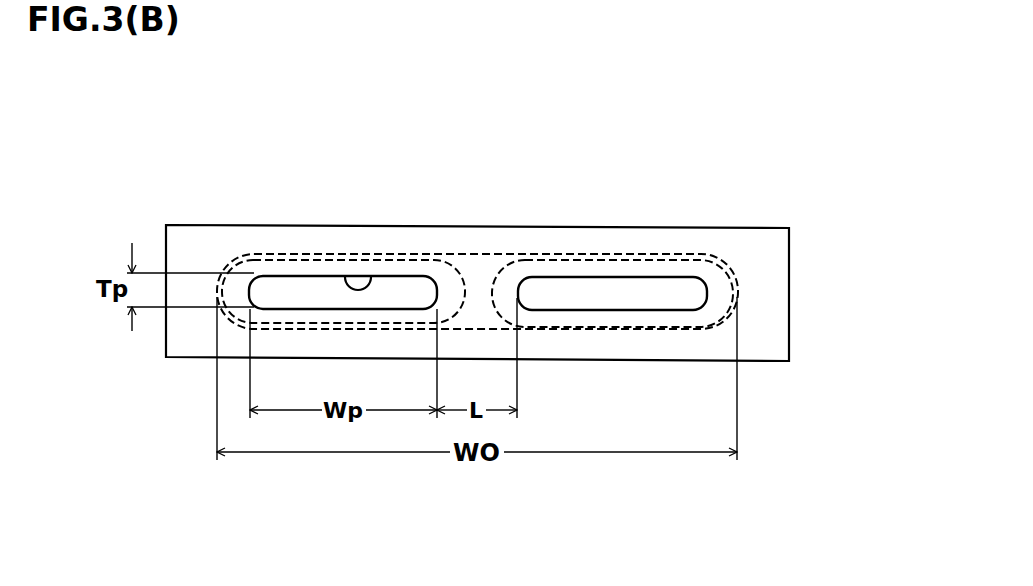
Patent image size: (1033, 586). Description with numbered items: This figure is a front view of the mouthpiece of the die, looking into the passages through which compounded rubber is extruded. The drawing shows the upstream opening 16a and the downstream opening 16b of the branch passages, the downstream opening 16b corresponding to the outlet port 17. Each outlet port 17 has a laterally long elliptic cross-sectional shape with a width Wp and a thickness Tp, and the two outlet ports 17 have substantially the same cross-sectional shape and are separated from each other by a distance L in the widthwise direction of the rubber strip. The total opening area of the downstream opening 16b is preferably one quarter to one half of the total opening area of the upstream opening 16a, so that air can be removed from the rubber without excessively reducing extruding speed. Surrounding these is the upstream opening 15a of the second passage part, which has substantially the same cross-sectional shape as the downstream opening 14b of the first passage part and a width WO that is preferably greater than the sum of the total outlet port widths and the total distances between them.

The downstream opening 16b is at (373, 283).
The outlet port 17 is at (376, 198).
The upstream opening 16a is at (456, 272).
The upstream opening of the second passage part 15a is at (503, 256).
The downstream opening of the first passage part 14b is at (477, 226).